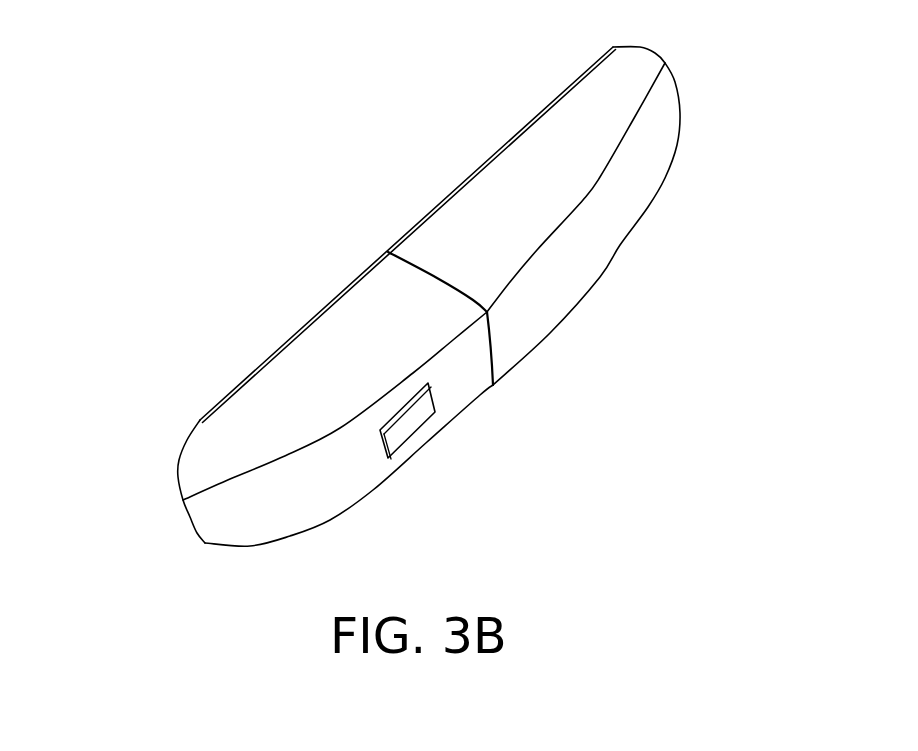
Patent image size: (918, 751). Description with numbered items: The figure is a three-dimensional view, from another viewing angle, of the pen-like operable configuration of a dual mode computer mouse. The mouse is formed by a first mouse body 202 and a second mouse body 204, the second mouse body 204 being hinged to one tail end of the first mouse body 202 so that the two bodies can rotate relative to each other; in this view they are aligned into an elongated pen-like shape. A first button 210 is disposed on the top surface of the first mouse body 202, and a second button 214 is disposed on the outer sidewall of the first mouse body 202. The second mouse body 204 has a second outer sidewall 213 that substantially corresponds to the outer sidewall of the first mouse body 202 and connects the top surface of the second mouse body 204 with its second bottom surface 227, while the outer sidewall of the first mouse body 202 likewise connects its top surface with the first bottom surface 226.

The first mouse body 202 is at (177, 435).
The second mouse body 204 is at (538, 73).
The first button 210 is at (228, 535).
The second outer sidewall 213 is at (647, 160).
The second button 214 is at (418, 415).
The first bottom surface 226 is at (333, 357).
The second bottom surface 227 is at (520, 150).